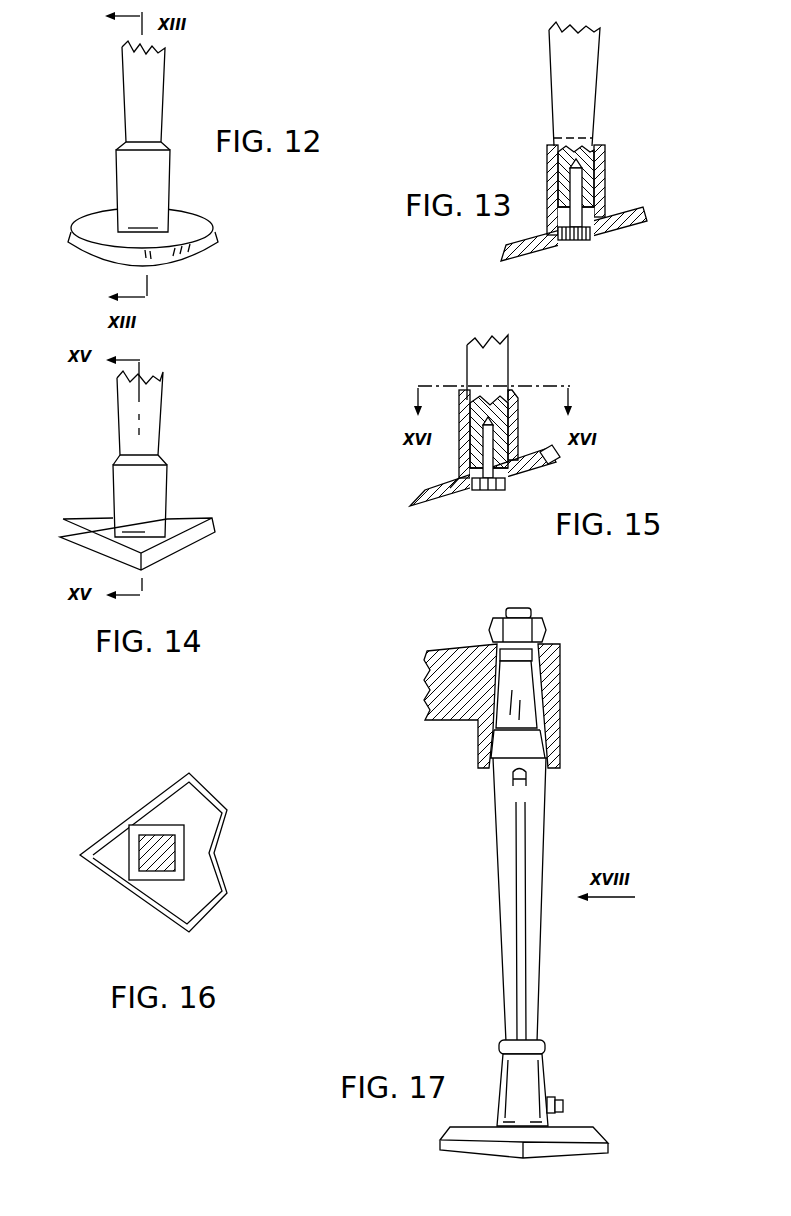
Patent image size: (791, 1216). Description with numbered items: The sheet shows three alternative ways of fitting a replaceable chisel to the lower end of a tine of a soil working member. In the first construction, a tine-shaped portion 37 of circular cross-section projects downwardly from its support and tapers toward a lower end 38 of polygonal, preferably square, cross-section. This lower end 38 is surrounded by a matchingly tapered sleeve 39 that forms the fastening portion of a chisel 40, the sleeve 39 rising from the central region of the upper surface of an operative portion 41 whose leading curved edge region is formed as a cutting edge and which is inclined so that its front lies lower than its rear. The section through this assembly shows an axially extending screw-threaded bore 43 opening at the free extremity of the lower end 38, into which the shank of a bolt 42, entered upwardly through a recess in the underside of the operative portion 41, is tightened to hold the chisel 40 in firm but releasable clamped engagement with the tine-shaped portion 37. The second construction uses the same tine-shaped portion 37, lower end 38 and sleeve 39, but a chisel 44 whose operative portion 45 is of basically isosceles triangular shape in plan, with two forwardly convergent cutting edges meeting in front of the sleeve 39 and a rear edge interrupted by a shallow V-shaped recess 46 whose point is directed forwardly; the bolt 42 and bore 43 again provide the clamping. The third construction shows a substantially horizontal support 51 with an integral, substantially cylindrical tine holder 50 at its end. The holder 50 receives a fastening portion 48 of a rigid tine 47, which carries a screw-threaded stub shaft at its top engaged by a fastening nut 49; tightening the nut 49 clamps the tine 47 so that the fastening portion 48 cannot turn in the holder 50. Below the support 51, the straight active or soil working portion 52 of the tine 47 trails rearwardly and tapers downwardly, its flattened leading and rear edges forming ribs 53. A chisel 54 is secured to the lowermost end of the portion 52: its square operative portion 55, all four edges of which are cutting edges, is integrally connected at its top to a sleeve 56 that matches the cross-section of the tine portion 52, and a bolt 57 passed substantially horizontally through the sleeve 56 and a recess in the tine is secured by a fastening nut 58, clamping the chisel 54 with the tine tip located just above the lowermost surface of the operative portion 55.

In FIG. 12, the tine-shaped portion 37 is at (136, 75).
In FIG. 13, the tine-shaped portion 37 is at (545, 58).
In FIG. 14, the tine-shaped portion 37 is at (170, 424).
In FIG. 15, the tine-shaped portion 37 is at (466, 346).
In FIG. 13, the lower end 38 is at (597, 172).
In FIG. 15, the lower end 38 is at (472, 414).
In FIG. 16, the lower end 38 is at (160, 840).
In FIG. 12, the sleeve 39 is at (135, 170).
In FIG. 13, the sleeve 39 is at (605, 196).
In FIG. 15, the sleeve 39 is at (513, 436).
In FIG. 16, the sleeve 39 is at (148, 826).
In FIG. 12, the chisel 40 is at (228, 236).
In FIG. 13, the chisel 40 is at (495, 252).
In FIG. 12, the operative portion 41 is at (175, 258).
In FIG. 13, the operative portion 41 is at (536, 252).
In FIG. 13, the bolt 42 is at (578, 242).
In FIG. 15, the bolt 42 is at (487, 490).
In FIG. 13, the screw-threaded bore 43 is at (573, 166).
In FIG. 15, the screw-threaded bore 43 is at (490, 430).
In FIG. 14, the chisel 44 is at (174, 489).
In FIG. 14, the operative portion 45 is at (90, 520).
In FIG. 15, the operative portion 45 is at (535, 468).
In FIG. 16, the operative portion 45 is at (147, 888).
In FIG. 15, the V-shaped recess 46 is at (562, 458).
In FIG. 16, the V-shaped recess 46 is at (216, 853).
In FIG. 17, the tine 47 is at (488, 810).
In FIG. 17, the fastening portion 48 is at (518, 688).
In FIG. 17, the fastening nut 49 is at (540, 632).
In FIG. 17, the tine holder 50 is at (562, 718).
In FIG. 17, the support 51 is at (428, 693).
In FIG. 17, the active or soil working portion 52 is at (537, 978).
In FIG. 17, the ribs 53 is at (516, 866).
In FIG. 17, the chisel 54 is at (553, 1051).
In FIG. 17, the operative portion 55 is at (452, 1140).
In FIG. 17, the sleeve 56 is at (515, 1085).
In FIG. 17, the bolt 57 is at (563, 1105).
In FIG. 17, the fastening nut 58 is at (553, 1096).